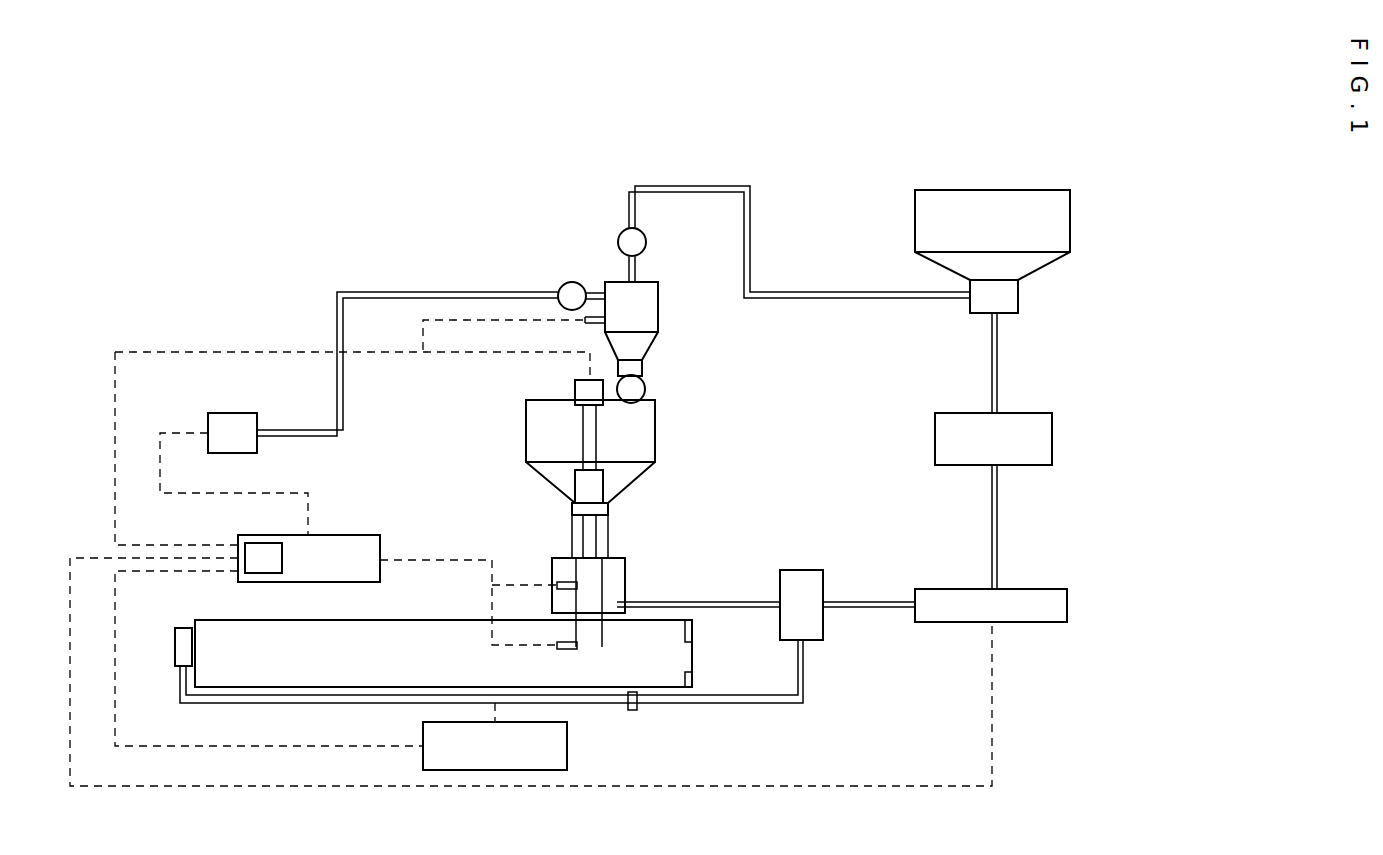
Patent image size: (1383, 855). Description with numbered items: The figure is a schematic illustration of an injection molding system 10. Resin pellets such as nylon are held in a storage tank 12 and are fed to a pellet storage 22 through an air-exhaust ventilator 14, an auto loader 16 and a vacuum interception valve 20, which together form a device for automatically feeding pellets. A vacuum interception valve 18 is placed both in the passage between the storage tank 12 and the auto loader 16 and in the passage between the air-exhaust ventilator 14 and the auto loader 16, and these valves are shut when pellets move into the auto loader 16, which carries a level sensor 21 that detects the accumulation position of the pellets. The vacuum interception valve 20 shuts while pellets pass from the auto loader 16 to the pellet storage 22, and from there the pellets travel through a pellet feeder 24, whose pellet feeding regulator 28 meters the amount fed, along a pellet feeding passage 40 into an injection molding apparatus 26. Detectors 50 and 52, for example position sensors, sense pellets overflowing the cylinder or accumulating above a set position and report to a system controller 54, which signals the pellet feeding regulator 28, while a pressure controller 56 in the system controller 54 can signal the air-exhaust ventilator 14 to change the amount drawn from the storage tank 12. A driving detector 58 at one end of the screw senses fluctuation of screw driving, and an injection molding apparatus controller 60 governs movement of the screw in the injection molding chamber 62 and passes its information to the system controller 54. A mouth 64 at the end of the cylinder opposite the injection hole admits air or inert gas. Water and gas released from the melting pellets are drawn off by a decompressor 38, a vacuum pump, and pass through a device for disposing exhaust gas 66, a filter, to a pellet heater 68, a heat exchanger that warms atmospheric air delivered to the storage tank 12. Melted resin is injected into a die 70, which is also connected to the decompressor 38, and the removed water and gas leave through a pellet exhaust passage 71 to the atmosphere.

The injection molding system 10 is at (234, 295).
The storage tank 12 is at (1055, 222).
The air-exhaust ventilator 14 is at (230, 428).
The auto loader 16 is at (653, 316).
The vacuum interception valve 18 is at (618, 240).
The vacuum interception valve 20 is at (644, 384).
The level sensor 21 is at (593, 325).
The pellet storage 22 is at (540, 432).
The pellet feeder 24 is at (628, 568).
The injection molding apparatus 26 is at (237, 703).
The pellet feeding regulator 28 is at (626, 478).
The decompressor 38 is at (1033, 590).
The pellet feeding passage 40 is at (554, 541).
The detector 50 is at (567, 649).
The detector 52 is at (566, 580).
The system controller 54 is at (348, 547).
The pressure controller 56 is at (262, 555).
The driving detector 58 is at (638, 712).
The injection molding apparatus controller 60 is at (555, 746).
The injection molding chamber 62 is at (355, 672).
The mouth 64 is at (690, 680).
The device for disposing exhaust gas 66 is at (800, 571).
The pellet heater 68 is at (1032, 412).
The die 70 is at (175, 648).
The pellet exhaust passage 71 is at (812, 644).